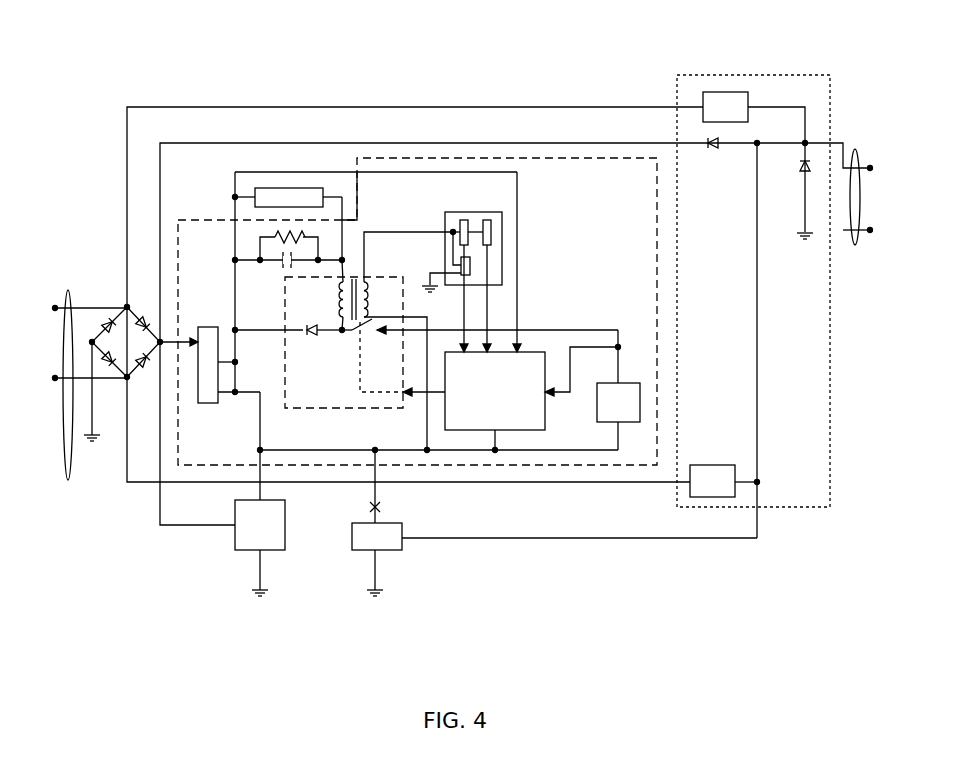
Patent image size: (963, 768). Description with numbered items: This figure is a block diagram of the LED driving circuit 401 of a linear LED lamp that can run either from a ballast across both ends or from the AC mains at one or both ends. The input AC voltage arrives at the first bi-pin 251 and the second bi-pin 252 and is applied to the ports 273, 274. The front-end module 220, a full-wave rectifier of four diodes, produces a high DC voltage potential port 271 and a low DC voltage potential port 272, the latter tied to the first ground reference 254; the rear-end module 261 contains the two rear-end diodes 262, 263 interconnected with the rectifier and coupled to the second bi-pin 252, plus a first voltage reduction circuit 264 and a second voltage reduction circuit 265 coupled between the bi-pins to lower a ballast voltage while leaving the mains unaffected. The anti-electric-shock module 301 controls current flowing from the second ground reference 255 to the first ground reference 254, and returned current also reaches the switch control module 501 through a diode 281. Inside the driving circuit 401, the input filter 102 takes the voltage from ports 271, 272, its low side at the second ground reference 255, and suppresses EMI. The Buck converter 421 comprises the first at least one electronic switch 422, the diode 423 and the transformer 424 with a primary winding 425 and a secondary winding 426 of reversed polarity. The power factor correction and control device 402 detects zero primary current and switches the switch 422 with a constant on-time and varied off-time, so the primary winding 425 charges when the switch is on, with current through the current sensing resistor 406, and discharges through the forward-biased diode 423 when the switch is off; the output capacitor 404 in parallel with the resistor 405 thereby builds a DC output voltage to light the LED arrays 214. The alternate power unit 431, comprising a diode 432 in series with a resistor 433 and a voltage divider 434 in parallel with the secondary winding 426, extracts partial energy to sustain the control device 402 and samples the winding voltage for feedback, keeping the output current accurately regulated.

The input filter 102 is at (198, 327).
The LED arrays 214 is at (291, 188).
The front-end module 220 is at (112, 296).
The first bi-pin 251 is at (66, 420).
The second bi-pin 252 is at (852, 160).
The first ground reference 254 is at (91, 442).
The second ground reference 255 is at (234, 407).
The rear-end module 261 is at (796, 73).
The rear-end diode 262 is at (712, 150).
The rear-end diode 263 is at (800, 167).
The first voltage reduction circuit 264 is at (722, 92).
The second voltage reduction circuit 265 is at (706, 465).
The high DC voltage potential port 271 is at (160, 343).
The low DC voltage potential port 272 is at (92, 342).
The port 273 is at (54, 306).
The port 274 is at (54, 380).
The diode 281 is at (380, 506).
The anti-electric-shock module 301 is at (280, 551).
The LED driving circuit 401 is at (441, 155).
The power factor correction and control device 402 is at (541, 352).
The output capacitor 404 is at (284, 266).
The resistor 405 is at (286, 236).
The current sensing resistor 406 is at (620, 382).
The Buck converter 421 is at (352, 410).
The first at least one electronic switch 422 is at (367, 324).
The diode 423 is at (310, 337).
The transformer 424 is at (347, 195).
The primary winding 425 is at (340, 293).
The secondary winding 426 is at (367, 292).
The alternate power unit 431 is at (506, 207).
The diode 432 is at (461, 219).
The resistor 433 is at (491, 227).
The voltage divider 434 is at (470, 264).
The switch control module 501 is at (392, 551).